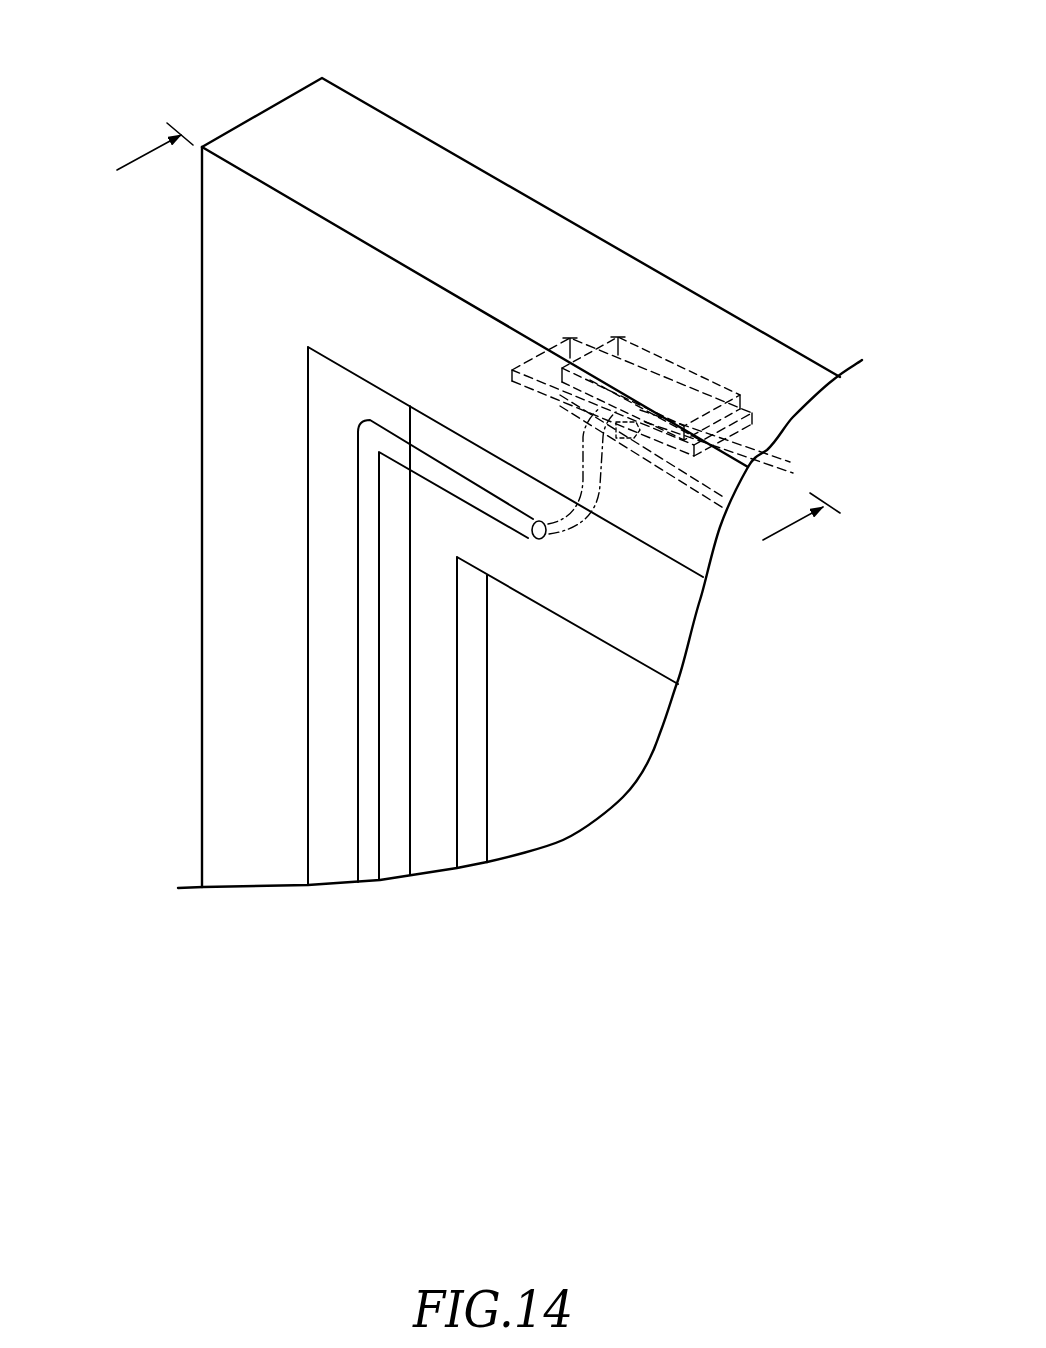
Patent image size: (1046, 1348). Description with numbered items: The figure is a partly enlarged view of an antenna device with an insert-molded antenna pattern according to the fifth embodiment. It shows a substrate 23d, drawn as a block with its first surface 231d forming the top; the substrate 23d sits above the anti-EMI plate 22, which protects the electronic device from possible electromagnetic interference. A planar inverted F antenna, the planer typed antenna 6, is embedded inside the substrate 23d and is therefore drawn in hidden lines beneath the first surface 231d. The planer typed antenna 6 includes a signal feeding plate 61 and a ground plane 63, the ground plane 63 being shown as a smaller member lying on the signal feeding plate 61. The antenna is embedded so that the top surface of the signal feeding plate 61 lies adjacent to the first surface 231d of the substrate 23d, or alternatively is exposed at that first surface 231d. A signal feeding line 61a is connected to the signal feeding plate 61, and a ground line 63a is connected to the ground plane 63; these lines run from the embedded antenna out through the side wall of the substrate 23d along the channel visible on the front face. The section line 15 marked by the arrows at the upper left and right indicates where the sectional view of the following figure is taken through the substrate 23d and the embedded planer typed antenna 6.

The planer typed antenna 6 is at (575, 548).
The line 15- 15 is at (466, 350).
The anti-EMI plate 22 is at (637, 750).
The substrate 23d is at (208, 343).
The first surface 231d is at (400, 143).
The signal feeding plate 61 is at (637, 330).
The signal feeding line 61a is at (580, 440).
The ground plane 63 is at (580, 340).
The ground line 63a is at (575, 452).